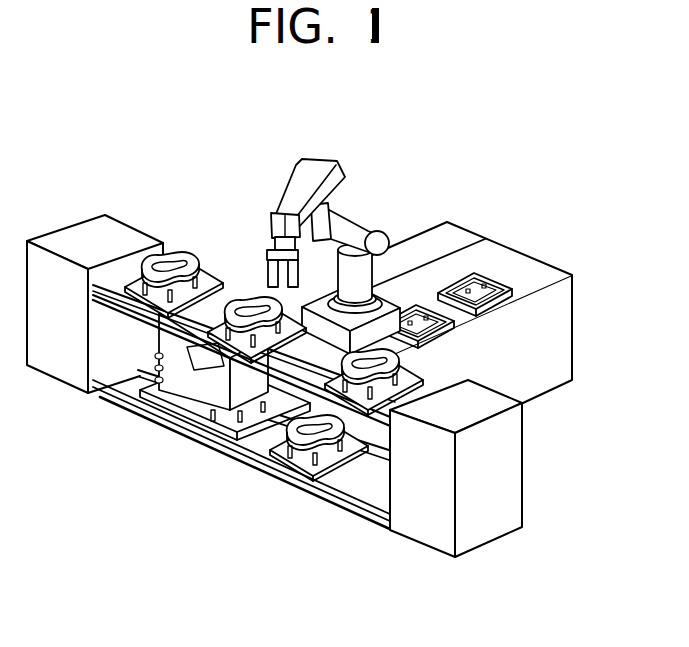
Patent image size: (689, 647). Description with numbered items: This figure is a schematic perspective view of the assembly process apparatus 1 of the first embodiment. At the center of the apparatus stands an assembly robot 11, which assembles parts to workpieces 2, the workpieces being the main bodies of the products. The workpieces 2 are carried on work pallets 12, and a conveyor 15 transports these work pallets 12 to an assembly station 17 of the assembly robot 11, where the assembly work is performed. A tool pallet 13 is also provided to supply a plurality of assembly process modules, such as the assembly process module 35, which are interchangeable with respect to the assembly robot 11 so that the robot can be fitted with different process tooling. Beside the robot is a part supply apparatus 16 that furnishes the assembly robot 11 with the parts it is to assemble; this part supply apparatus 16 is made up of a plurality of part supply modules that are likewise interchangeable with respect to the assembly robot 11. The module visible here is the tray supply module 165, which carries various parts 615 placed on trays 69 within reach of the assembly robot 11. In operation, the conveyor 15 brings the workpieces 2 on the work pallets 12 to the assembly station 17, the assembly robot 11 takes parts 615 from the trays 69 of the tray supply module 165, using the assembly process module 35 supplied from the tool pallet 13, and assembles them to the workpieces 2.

The assembly process apparatus 1 is at (117, 130).
The workpieces 2 is at (172, 254).
The assembly robot 11 is at (356, 196).
The work pallets 12 is at (247, 332).
The tool pallet 13 is at (207, 438).
The conveyor 15 is at (385, 520).
The part supply apparatus 16 is at (594, 340).
The assembly station 17 is at (192, 382).
The assembly process module 35 is at (268, 276).
The trays 69 is at (490, 276).
The tray supply module 165 is at (533, 270).
The parts 615 is at (424, 314).